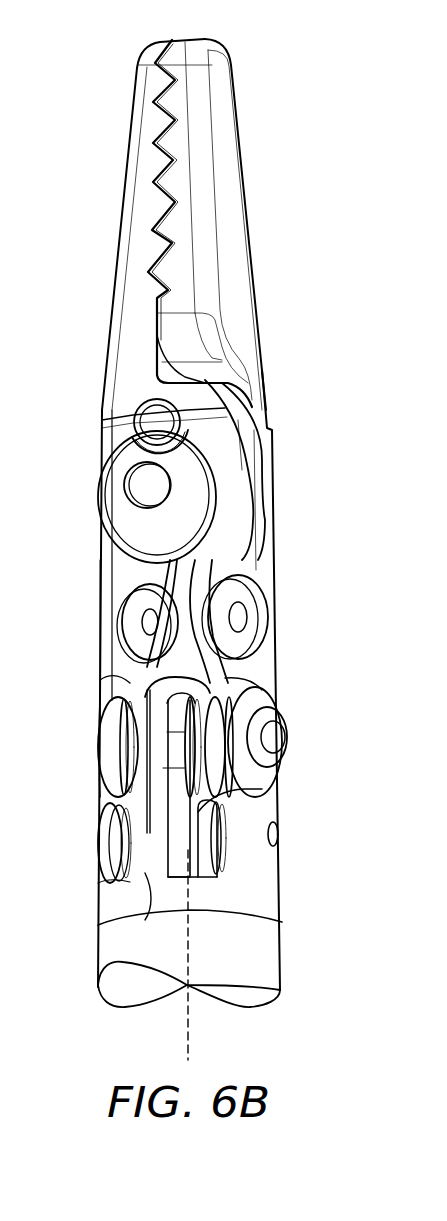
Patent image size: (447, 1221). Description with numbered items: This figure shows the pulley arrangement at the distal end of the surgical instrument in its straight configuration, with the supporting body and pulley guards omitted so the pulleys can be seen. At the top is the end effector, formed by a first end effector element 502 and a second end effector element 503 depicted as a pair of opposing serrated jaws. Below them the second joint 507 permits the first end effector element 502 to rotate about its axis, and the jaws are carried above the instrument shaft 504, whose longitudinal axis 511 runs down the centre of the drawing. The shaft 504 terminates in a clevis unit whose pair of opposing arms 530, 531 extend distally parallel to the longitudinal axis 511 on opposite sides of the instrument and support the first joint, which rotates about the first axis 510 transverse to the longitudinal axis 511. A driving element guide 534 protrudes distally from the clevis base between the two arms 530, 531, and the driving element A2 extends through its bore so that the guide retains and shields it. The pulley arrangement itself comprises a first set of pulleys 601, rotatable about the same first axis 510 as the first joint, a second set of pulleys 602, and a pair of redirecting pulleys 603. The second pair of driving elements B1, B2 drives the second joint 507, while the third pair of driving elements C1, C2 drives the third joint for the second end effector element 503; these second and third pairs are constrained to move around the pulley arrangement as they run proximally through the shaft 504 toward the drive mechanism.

The first end effector element 502 is at (141, 203).
The second end effector element 503 is at (233, 194).
The instrument shaft 504 is at (268, 950).
The second joint 507 is at (130, 487).
The first axis 510 is at (286, 735).
The longitudinal axis of the shaft 511 is at (189, 1033).
The arm 530 is at (98, 908).
The arm 531 is at (279, 863).
The driving element guide 534 is at (144, 919).
The first set of pulleys 601 is at (83, 707).
The second set of pulleys 602 is at (83, 807).
The pair of redirecting pulleys 603 is at (285, 572).
The driving element A2 is at (262, 789).
The driving element B1 is at (268, 683).
The driving element B2 is at (100, 571).
The driving element C1 is at (120, 676).
The driving element C2 is at (268, 558).